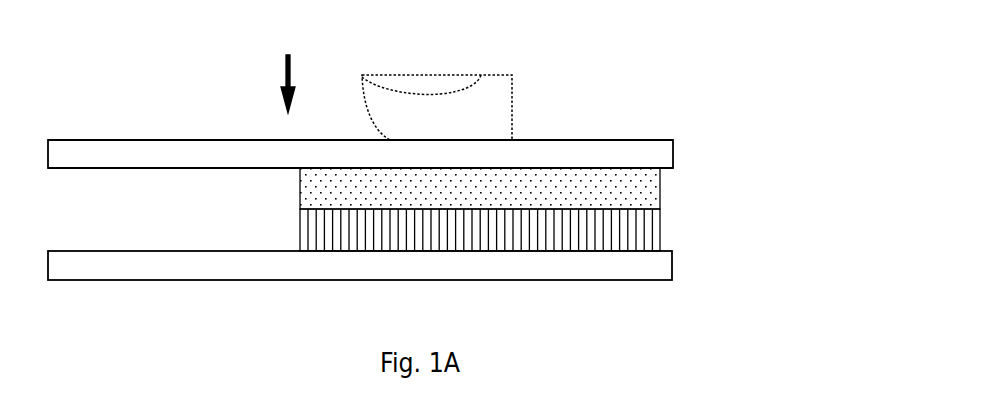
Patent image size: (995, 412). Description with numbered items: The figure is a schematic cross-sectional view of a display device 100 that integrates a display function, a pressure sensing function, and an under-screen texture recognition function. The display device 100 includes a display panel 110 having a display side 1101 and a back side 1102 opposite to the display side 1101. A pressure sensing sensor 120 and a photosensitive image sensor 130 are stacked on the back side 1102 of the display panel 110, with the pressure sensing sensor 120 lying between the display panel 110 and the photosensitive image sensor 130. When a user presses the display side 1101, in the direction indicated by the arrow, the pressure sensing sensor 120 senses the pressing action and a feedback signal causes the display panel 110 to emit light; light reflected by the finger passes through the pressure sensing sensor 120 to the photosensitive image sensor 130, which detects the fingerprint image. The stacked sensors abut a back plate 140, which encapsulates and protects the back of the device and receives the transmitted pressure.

The display device 100 is at (636, 31).
The display panel 110 is at (643, 147).
The display side 1101 is at (155, 127).
The back side 1102 is at (167, 180).
The pressure sensing sensor 120 is at (643, 188).
The photosensitive image sensor 130 is at (648, 233).
The back plate 140 is at (648, 267).